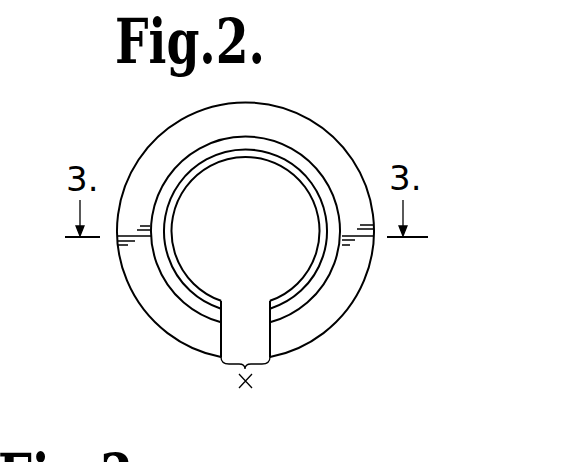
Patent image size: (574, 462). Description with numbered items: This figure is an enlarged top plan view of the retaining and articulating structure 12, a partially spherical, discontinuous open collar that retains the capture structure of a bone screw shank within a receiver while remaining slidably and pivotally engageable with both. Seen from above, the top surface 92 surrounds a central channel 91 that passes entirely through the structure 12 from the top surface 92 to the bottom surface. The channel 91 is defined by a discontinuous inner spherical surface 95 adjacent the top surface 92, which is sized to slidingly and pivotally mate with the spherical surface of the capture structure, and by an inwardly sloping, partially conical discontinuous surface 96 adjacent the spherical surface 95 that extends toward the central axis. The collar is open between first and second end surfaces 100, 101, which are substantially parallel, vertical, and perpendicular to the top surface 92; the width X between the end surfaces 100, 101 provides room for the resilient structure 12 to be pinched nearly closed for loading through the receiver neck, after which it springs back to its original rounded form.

The retaining and articulating structure 12 is at (329, 133).
The central channel 91 is at (287, 192).
The top surface 92 is at (338, 305).
The inner spherical surface 95 is at (328, 199).
The partially conical discontinuous surface 96 is at (317, 264).
The first end surface 100 is at (222, 335).
The second end surface 101 is at (270, 330).